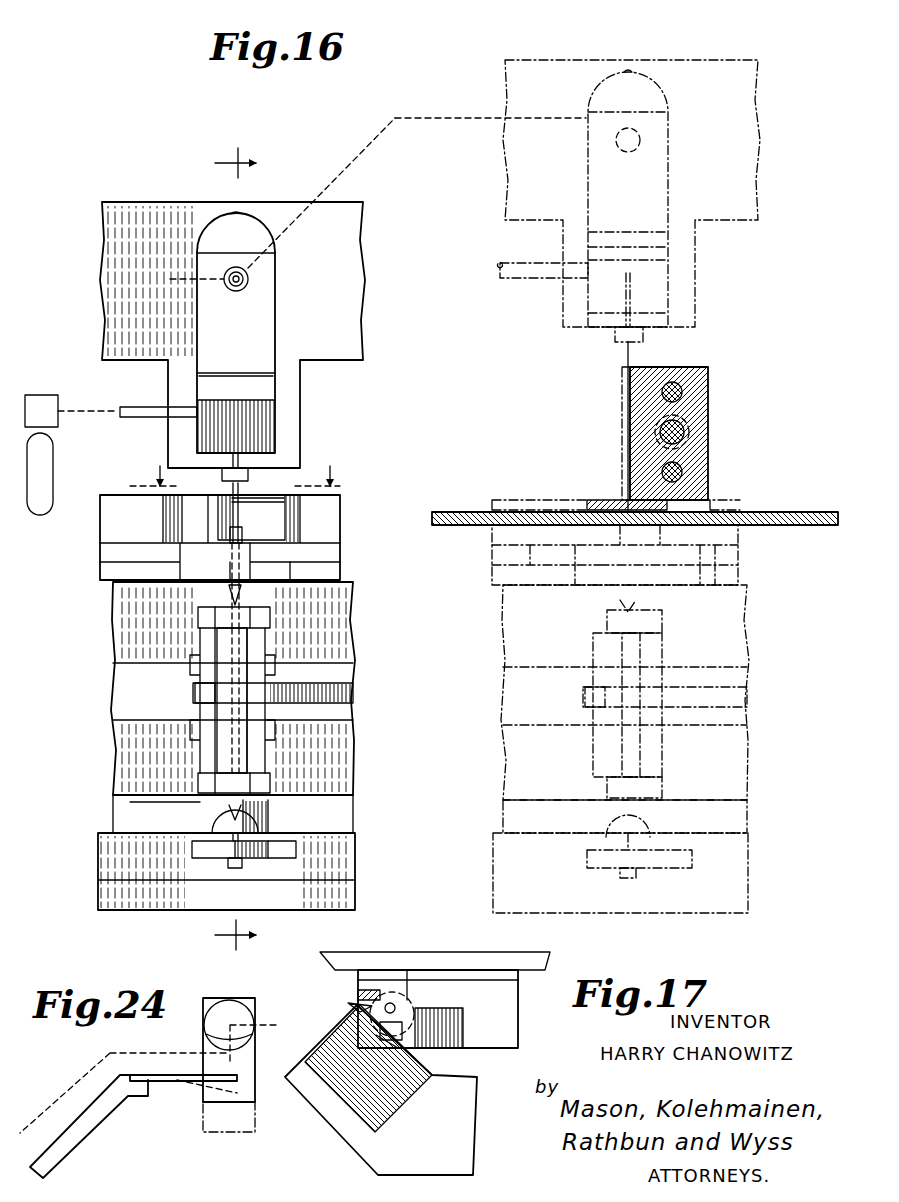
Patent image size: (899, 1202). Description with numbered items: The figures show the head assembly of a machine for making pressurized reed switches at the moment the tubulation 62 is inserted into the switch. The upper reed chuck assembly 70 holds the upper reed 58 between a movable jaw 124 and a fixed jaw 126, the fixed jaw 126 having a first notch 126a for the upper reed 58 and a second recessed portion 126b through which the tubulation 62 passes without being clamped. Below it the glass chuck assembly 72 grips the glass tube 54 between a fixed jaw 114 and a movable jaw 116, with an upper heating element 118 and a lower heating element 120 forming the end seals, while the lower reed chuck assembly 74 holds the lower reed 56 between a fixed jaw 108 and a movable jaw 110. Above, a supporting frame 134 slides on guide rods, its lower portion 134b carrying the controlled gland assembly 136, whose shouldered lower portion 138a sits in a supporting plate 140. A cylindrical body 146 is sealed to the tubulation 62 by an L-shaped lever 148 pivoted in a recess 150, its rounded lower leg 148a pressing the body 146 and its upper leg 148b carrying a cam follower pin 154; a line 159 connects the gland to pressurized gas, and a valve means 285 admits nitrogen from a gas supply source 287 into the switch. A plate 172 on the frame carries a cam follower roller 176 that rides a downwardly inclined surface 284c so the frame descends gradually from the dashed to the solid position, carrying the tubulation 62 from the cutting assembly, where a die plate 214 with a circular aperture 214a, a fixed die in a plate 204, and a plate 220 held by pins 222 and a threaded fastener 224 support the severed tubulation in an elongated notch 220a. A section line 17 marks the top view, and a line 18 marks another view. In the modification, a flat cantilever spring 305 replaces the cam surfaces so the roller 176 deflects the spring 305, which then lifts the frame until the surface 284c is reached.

In FIG. 16, the supporting frame 134 is at (102, 215).
In FIG. 17, the supporting frame 134 is at (508, 78).
In FIG. 16, the lower portion of supporting frame 134b is at (152, 204).
In FIG. 17, the lower portion of supporting frame 134b is at (712, 58).
In FIG. 16, the L-shaped lever 148 is at (270, 312).
In FIG. 17, the L-shaped lever 148 is at (666, 172).
In FIG. 16, the rounded lower leg 148a is at (252, 373).
In FIG. 17, the rounded lower leg 148a is at (650, 232).
In FIG. 16, the upper leg 148b is at (272, 268).
In FIG. 17, the upper leg 148b is at (664, 118).
In FIG. 16, the recess 150 is at (232, 212).
In FIG. 17, the recess 150 is at (633, 68).
In FIG. 16, the cam follower pin 154 is at (250, 279).
In FIG. 17, the cam follower pin 154 is at (642, 140).
In FIG. 16, the cylindrical body 146 is at (276, 410).
In FIG. 17, the cylindrical body 146 is at (668, 270).
In FIG. 16, the controlled gland assembly 136 is at (280, 424).
In FIG. 17, the controlled gland assembly 136 is at (672, 290).
In FIG. 17, the supporting plate 140 is at (670, 322).
In FIG. 16, the shouldered lower portion 138a is at (246, 476).
In FIG. 17, the shouldered lower portion 138a is at (646, 338).
In FIG. 16, the line 159 is at (124, 406).
In FIG. 17, the line 159 is at (528, 280).
In FIG. 16, the valve means 285 is at (42, 395).
In FIG. 16, the gas supply source 287 is at (54, 476).
In FIG. 16, the tubulation 62 is at (230, 483).
In FIG. 17, the tubulation 62 is at (625, 357).
In FIG. 24, the tubulation 62 is at (392, 1003).
In FIG. 16, the section line 17— 17 is at (244, 471).
In FIG. 16, the section line 18 is at (225, 553).
In FIG. 16, the upper reed chuck assembly 70 is at (96, 526).
In FIG. 17, the upper reed chuck assembly 70 is at (488, 550).
In FIG. 16, the movable jaw 124 is at (336, 551).
In FIG. 24, the movable jaw 124 is at (372, 1152).
In FIG. 16, the glass chuck assembly 72 is at (108, 695).
In FIG. 17, the glass chuck assembly 72 is at (500, 698).
In FIG. 16, the movable jaw 116 is at (332, 692).
In FIG. 17, the movable jaw 116 is at (740, 700).
In FIG. 16, the fixed jaw 114 is at (198, 730).
In FIG. 16, the glass housing or tube 54 is at (248, 748).
In FIG. 17, the glass housing or tube 54 is at (642, 758).
In FIG. 24, the glass housing or tube 54 is at (352, 1012).
In FIG. 16, the upper heating element 118 is at (248, 612).
In FIG. 17, the upper heating element 118 is at (655, 625).
In FIG. 16, the lower heating element 120 is at (250, 782).
In FIG. 17, the lower heating element 120 is at (660, 785).
In FIG. 16, the upper reed 58 is at (236, 592).
In FIG. 24, the upper reed 58 is at (384, 1036).
In FIG. 16, the lower reed 56 is at (245, 833).
In FIG. 17, the lower reed 56 is at (646, 600).
In FIG. 16, the lower reed chuck assembly 74 is at (92, 880).
In FIG. 17, the lower reed chuck assembly 74 is at (489, 872).
In FIG. 16, the movable jaw 110 is at (328, 842).
In FIG. 17, the movable jaw 110 is at (740, 852).
In FIG. 16, the fixed jaw 108 is at (110, 906).
In FIG. 17, the fixed jaw 108 is at (690, 912).
In FIG. 17, the plate 220 is at (702, 402).
In FIG. 17, the elongated notch 220a is at (626, 410).
In FIG. 17, the pins 222 is at (680, 390).
In FIG. 17, the threaded fastener 224 is at (690, 432).
In FIG. 17, the die plate 214 is at (592, 500).
In FIG. 17, the circular aperture 214a is at (628, 498).
In FIG. 17, the plate 204 is at (778, 526).
In FIG. 24, the plate 172 is at (255, 1000).
In FIG. 24, the cam follower roller 176 is at (226, 1004).
In FIG. 24, the flat cantilever spring 305 is at (183, 1076).
In FIG. 24, the downwardly inclined surface 284c is at (62, 1132).
In FIG. 24, the fixed jaw 126 is at (510, 1002).
In FIG. 24, the first notch 126a is at (408, 1046).
In FIG. 24, the second recessed portion 126b is at (378, 1000).